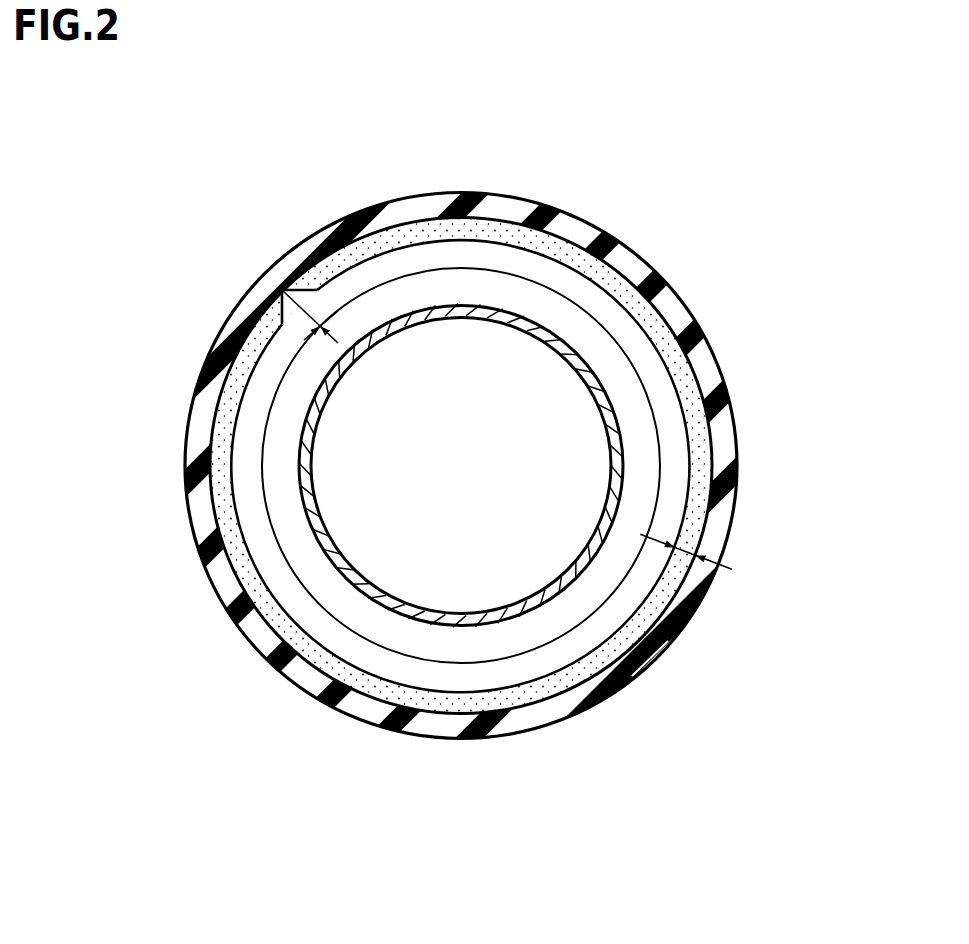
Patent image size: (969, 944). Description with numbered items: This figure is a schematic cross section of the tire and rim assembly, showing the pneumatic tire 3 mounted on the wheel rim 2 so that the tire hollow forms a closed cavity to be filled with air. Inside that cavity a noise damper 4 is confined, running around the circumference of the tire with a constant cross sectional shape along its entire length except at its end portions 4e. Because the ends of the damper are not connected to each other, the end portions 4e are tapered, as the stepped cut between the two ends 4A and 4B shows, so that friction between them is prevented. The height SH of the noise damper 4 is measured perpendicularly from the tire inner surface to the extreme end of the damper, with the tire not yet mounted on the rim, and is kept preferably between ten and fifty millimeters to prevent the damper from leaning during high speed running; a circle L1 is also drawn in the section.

The wheel rim 2 is at (600, 412).
The pneumatic tire 3 is at (730, 369).
The noise damper 4 is at (664, 327).
The first end portion of band 4A is at (215, 412).
The second end portion of band 4B is at (235, 496).
The end portions of the damper 4e is at (297, 289).
The height of the noise damper SH is at (690, 552).
The reference circle line L1 is at (500, 661).